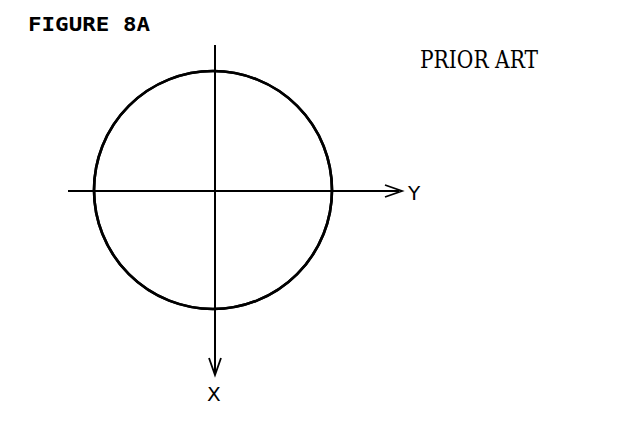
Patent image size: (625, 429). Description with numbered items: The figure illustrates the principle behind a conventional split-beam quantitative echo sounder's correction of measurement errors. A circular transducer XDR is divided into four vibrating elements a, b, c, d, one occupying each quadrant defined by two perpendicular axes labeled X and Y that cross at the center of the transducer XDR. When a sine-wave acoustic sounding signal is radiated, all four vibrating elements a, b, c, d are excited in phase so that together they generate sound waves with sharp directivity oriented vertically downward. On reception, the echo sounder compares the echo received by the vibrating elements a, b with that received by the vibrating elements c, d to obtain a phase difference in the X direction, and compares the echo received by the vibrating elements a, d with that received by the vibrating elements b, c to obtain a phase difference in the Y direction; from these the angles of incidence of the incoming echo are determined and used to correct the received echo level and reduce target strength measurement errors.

The X-ray detector (prior art) XDR is at (253, 75).
The vibrating element a is at (153, 142).
The vibrating element b is at (275, 142).
The vibrating element c is at (275, 240).
The vibrating element d is at (153, 242).